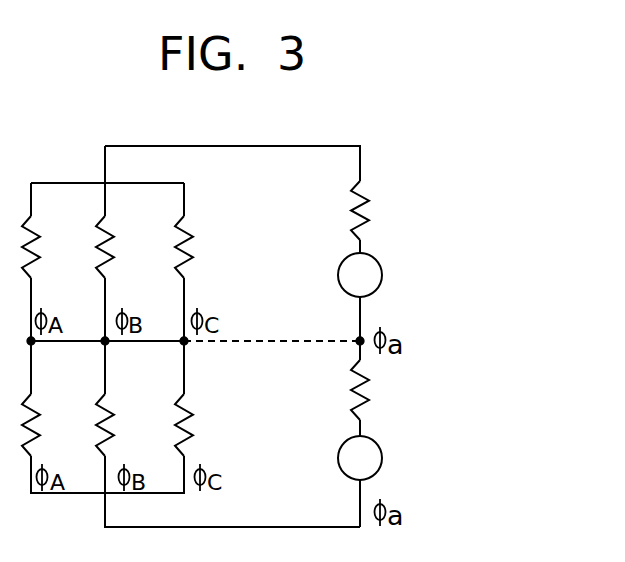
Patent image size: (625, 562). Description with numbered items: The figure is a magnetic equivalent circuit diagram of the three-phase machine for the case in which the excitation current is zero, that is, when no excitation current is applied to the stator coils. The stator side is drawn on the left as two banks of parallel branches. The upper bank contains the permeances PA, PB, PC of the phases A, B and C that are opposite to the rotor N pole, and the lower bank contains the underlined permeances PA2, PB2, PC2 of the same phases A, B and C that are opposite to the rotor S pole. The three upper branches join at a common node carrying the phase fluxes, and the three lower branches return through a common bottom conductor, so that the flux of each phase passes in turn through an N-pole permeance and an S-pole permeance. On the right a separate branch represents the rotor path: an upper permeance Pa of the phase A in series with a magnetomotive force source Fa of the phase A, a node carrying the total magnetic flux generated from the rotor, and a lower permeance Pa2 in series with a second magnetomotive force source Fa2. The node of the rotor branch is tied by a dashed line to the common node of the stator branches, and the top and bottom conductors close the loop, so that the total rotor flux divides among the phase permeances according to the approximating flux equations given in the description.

The permeance of phase A opposite the rotor N pole PA is at (48, 247).
The permeance of phase B opposite the rotor N pole PB is at (122, 247).
The permeance of phase C opposite the rotor N pole PC is at (201, 247).
The permeance of phase A opposite the rotor S pole PA2 is at (78, 447).
The permeance of phase B opposite the rotor S pole PB2 is at (152, 447).
The permeance of phase C opposite the rotor S pole PC2 is at (238, 444).
The permeance of the phase A Pa is at (379, 210).
The magnetomotive force of the phase A Fa is at (360, 275).
The permeance of the phase A (second instance) Pa2 is at (379, 390).
The magnetomotive force of the phase A (second instance) Fa2 is at (360, 458).